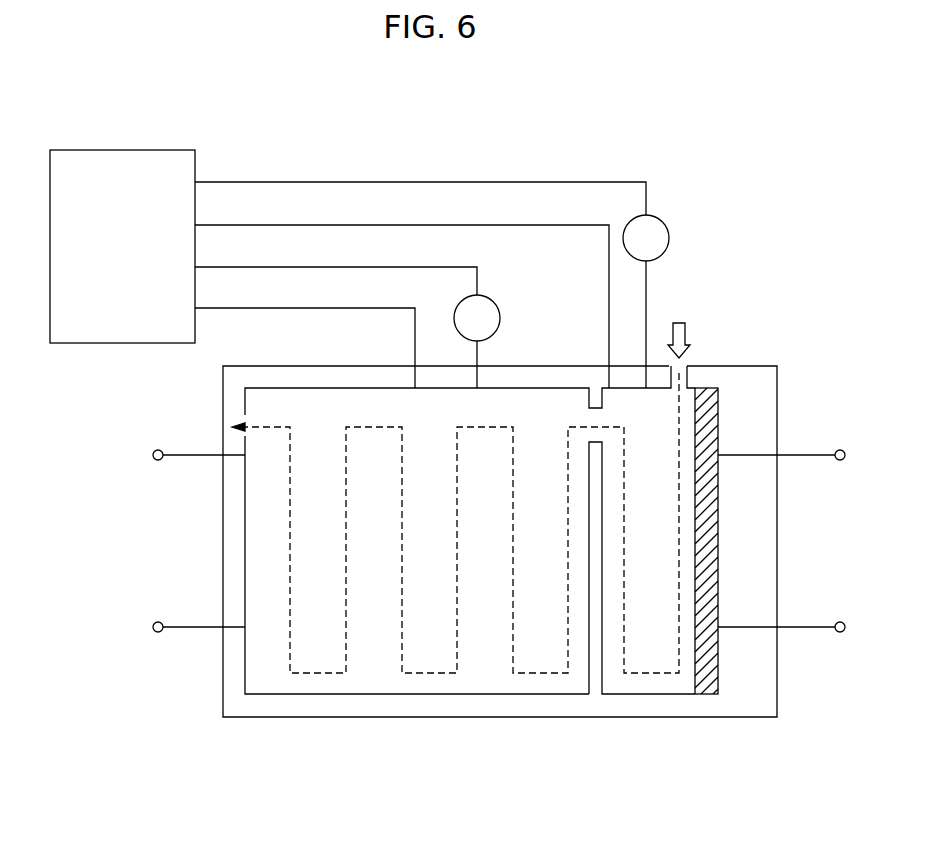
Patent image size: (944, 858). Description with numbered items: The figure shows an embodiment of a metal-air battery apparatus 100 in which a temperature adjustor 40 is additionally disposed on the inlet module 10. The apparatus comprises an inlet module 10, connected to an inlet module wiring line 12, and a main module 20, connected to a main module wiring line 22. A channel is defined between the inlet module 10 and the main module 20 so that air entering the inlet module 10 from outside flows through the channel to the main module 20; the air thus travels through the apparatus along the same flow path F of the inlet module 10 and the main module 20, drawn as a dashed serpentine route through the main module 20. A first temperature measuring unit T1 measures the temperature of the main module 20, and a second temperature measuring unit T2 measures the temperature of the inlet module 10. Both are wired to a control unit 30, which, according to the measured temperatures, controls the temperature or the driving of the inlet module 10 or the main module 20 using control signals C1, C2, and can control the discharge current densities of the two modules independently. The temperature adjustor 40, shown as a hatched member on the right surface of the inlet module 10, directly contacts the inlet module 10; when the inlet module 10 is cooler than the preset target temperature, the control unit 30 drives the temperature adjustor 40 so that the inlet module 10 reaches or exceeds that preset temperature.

The metal-air battery apparatus 100 is at (770, 335).
The inlet module 10 is at (648, 694).
The inlet module wiring line 12 is at (810, 455).
The main module 20 is at (418, 694).
The main module wiring line 22 is at (192, 455).
The control unit 30 is at (123, 150).
The temperature adjustor 40 is at (707, 694).
The flow path F is at (315, 673).
The control signal C1 is at (320, 308).
The control signal C2 is at (415, 225).
The first temperature measuring unit T1 is at (477, 341).
The second temperature measuring unit T2 is at (646, 301).